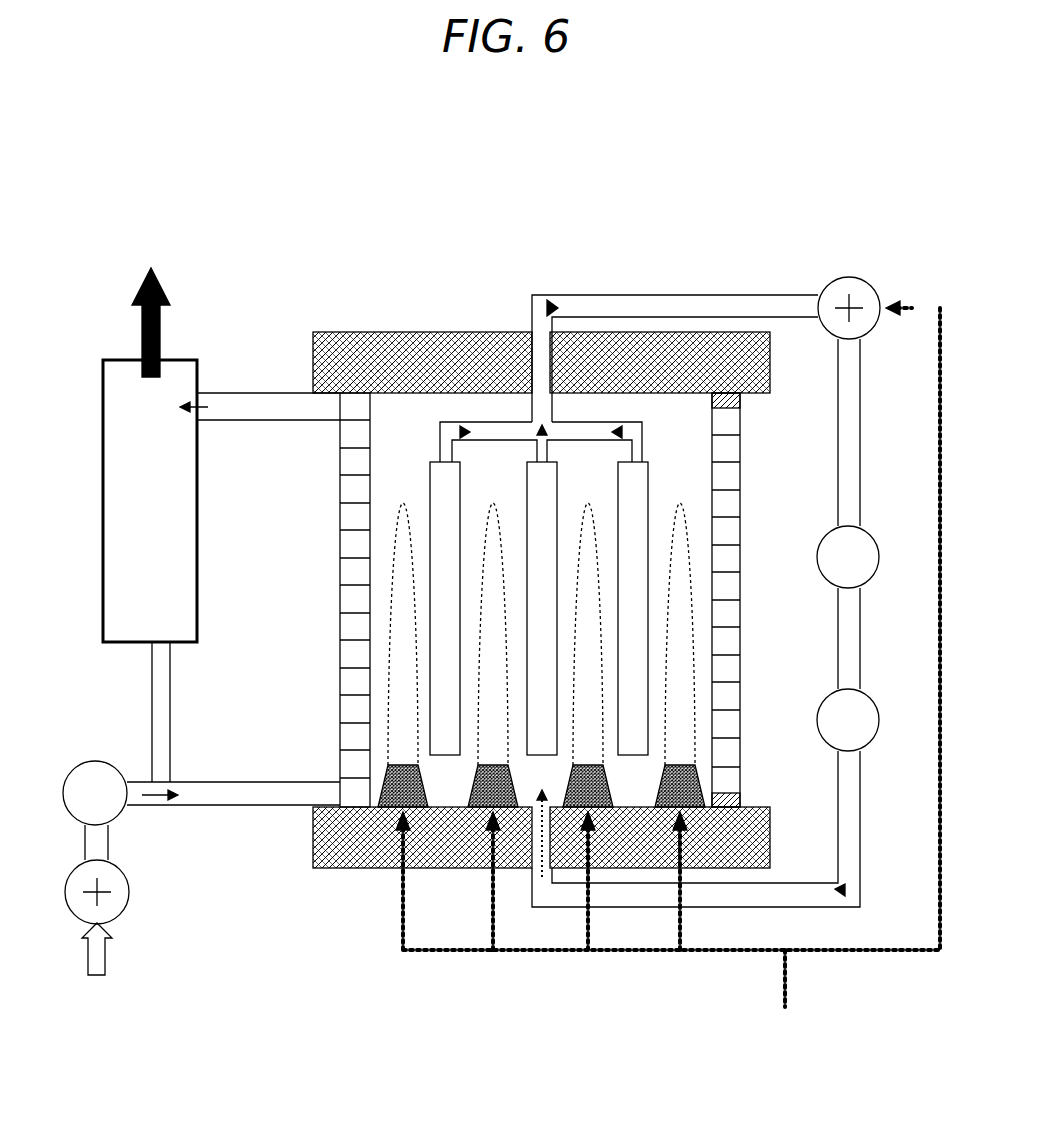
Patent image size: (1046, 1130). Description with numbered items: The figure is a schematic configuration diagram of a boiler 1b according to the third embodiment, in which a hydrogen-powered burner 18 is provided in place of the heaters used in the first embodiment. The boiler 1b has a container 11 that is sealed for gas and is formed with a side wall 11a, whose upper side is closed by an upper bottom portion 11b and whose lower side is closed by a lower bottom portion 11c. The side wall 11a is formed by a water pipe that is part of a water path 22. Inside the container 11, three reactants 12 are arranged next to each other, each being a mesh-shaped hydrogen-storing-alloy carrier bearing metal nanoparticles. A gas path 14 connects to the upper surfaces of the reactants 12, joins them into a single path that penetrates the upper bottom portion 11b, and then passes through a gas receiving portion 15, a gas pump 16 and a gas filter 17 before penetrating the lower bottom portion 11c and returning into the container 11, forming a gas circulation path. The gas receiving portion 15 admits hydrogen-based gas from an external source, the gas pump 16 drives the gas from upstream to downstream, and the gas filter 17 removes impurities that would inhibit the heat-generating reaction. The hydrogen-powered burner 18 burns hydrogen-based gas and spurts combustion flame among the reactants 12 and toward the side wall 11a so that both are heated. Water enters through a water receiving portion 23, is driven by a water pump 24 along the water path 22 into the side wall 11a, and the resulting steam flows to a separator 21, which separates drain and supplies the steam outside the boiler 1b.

The boiler 1b is at (906, 177).
The container 11 is at (449, 312).
The side wall 11a is at (340, 625).
The upper bottom portion 11b is at (373, 332).
The lower bottom portion 11c is at (333, 870).
The reactant 12 is at (430, 475).
The gas path 14 is at (637, 295).
The gas receiving portion 15 is at (822, 330).
The gas pump 16 is at (872, 533).
The gas filter 17 is at (875, 700).
The hydrogen-powered burner 18 is at (700, 780).
The separator 21 is at (193, 360).
The water path 22 is at (215, 425).
The water receiving portion 23 is at (125, 905).
The water pump 24 is at (100, 762).